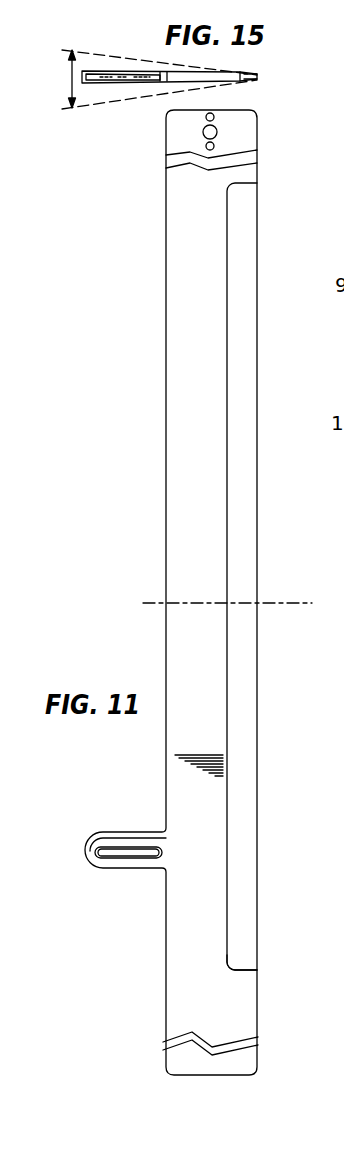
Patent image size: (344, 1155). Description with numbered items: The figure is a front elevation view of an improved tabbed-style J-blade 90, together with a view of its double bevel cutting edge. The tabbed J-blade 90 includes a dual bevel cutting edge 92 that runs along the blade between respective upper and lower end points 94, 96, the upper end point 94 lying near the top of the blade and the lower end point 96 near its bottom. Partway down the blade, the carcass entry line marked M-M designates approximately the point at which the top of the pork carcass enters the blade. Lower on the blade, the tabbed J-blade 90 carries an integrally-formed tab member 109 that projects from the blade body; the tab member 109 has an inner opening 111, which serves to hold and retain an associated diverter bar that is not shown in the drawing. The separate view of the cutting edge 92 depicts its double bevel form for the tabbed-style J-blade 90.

The tabbed-style J-blade 90 is at (123, 186).
The dual bevel cutting edge 92 is at (258, 306).
The upper end point 94 is at (242, 183).
The lower end point 96 is at (240, 969).
The tab member 109 is at (118, 838).
The inner opening 111 is at (113, 853).